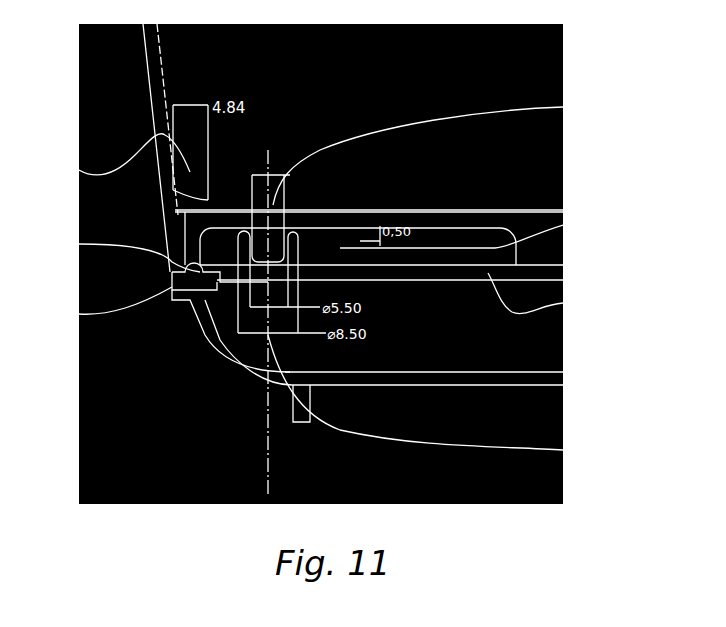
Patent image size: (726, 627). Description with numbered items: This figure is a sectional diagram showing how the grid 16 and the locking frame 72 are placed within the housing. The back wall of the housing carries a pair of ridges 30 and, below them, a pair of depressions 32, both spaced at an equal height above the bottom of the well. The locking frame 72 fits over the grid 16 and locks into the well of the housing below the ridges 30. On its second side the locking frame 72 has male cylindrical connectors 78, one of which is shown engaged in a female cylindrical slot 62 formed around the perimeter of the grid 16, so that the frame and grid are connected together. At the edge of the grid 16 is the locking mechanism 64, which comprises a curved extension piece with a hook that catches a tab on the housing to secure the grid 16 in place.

The ridges 30 is at (80, 170).
The male cylindrical connectors 78 is at (562, 107).
The locking frame 72 is at (562, 225).
The grid 16 is at (562, 303).
The locking mechanism 64 is at (80, 244).
The depressions 32 is at (80, 314).
The female cylindrical slots 62 is at (562, 450).